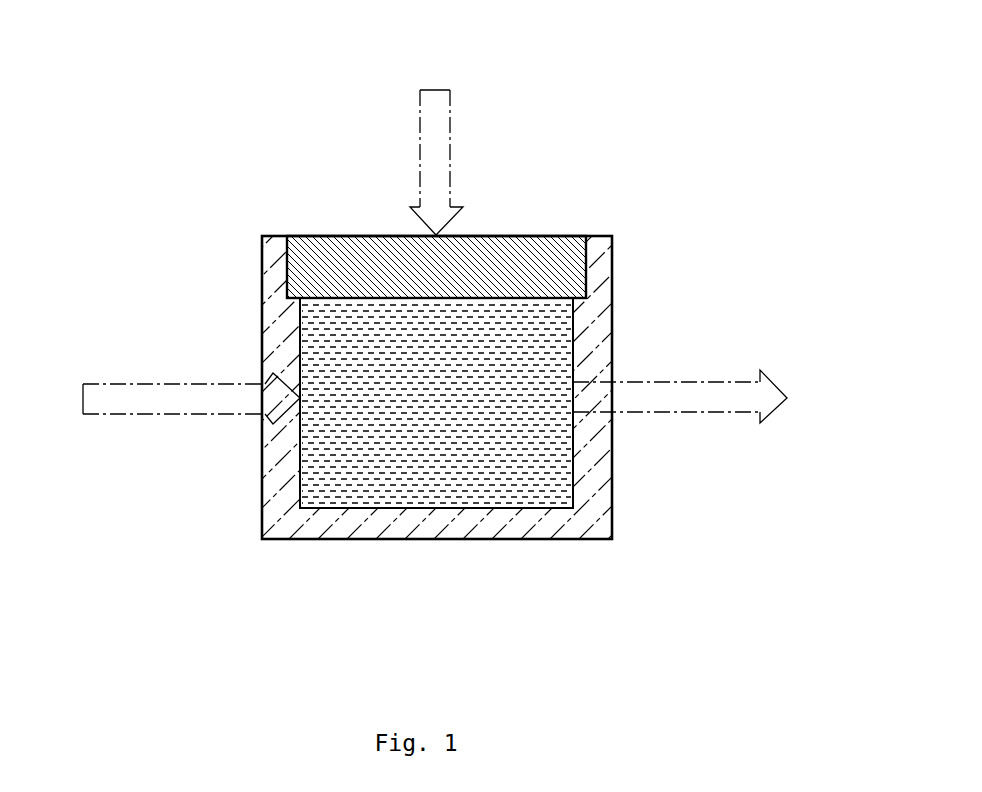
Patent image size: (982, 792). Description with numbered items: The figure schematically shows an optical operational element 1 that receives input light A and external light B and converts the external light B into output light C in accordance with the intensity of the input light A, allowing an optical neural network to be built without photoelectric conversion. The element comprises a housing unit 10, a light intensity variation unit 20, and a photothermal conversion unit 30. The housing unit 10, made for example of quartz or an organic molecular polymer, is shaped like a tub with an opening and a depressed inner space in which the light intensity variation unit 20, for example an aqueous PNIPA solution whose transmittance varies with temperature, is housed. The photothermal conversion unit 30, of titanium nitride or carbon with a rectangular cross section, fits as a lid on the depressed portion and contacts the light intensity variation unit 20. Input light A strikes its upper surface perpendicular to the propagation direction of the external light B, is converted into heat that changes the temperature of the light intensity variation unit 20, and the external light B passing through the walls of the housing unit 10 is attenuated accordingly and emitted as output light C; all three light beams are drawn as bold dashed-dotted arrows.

The optical operational element 1 is at (458, 367).
The housing unit 10 is at (611, 289).
The light intensity variation unit 20 is at (458, 503).
The photothermal conversion unit 30 is at (534, 256).
The input light A is at (443, 130).
The external light B is at (153, 407).
The output light C is at (702, 407).